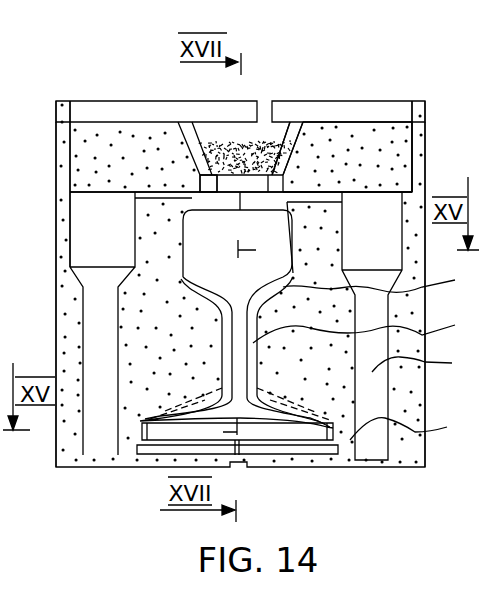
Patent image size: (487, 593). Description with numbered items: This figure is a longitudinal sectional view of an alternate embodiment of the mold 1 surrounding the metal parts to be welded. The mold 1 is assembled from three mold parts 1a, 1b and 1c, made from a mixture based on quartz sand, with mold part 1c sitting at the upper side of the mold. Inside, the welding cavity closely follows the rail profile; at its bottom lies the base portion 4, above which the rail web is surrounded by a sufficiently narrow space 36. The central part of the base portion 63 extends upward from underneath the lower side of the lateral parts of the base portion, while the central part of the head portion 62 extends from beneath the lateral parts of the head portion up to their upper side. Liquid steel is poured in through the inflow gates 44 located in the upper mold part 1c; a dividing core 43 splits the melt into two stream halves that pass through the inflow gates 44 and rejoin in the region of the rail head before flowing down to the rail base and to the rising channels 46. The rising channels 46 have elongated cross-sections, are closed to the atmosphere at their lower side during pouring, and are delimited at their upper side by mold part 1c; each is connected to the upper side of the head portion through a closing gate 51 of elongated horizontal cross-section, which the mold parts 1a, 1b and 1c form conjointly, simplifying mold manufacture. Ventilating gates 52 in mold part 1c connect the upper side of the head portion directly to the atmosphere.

The mold 1 is at (137, 458).
The mold part 1a is at (70, 457).
The mold part 1b is at (408, 467).
The mold part 1c is at (375, 143).
The base portion 4 is at (305, 424).
The space 36 is at (316, 322).
The dividing core 43 is at (210, 137).
The inflow gates 44 is at (307, 125).
The rising channels 46 is at (429, 365).
The closing gate 51 is at (315, 195).
The ventilating gates 52 is at (207, 183).
The central part of head portion 62 is at (313, 346).
The central part of base portion 63 is at (298, 450).